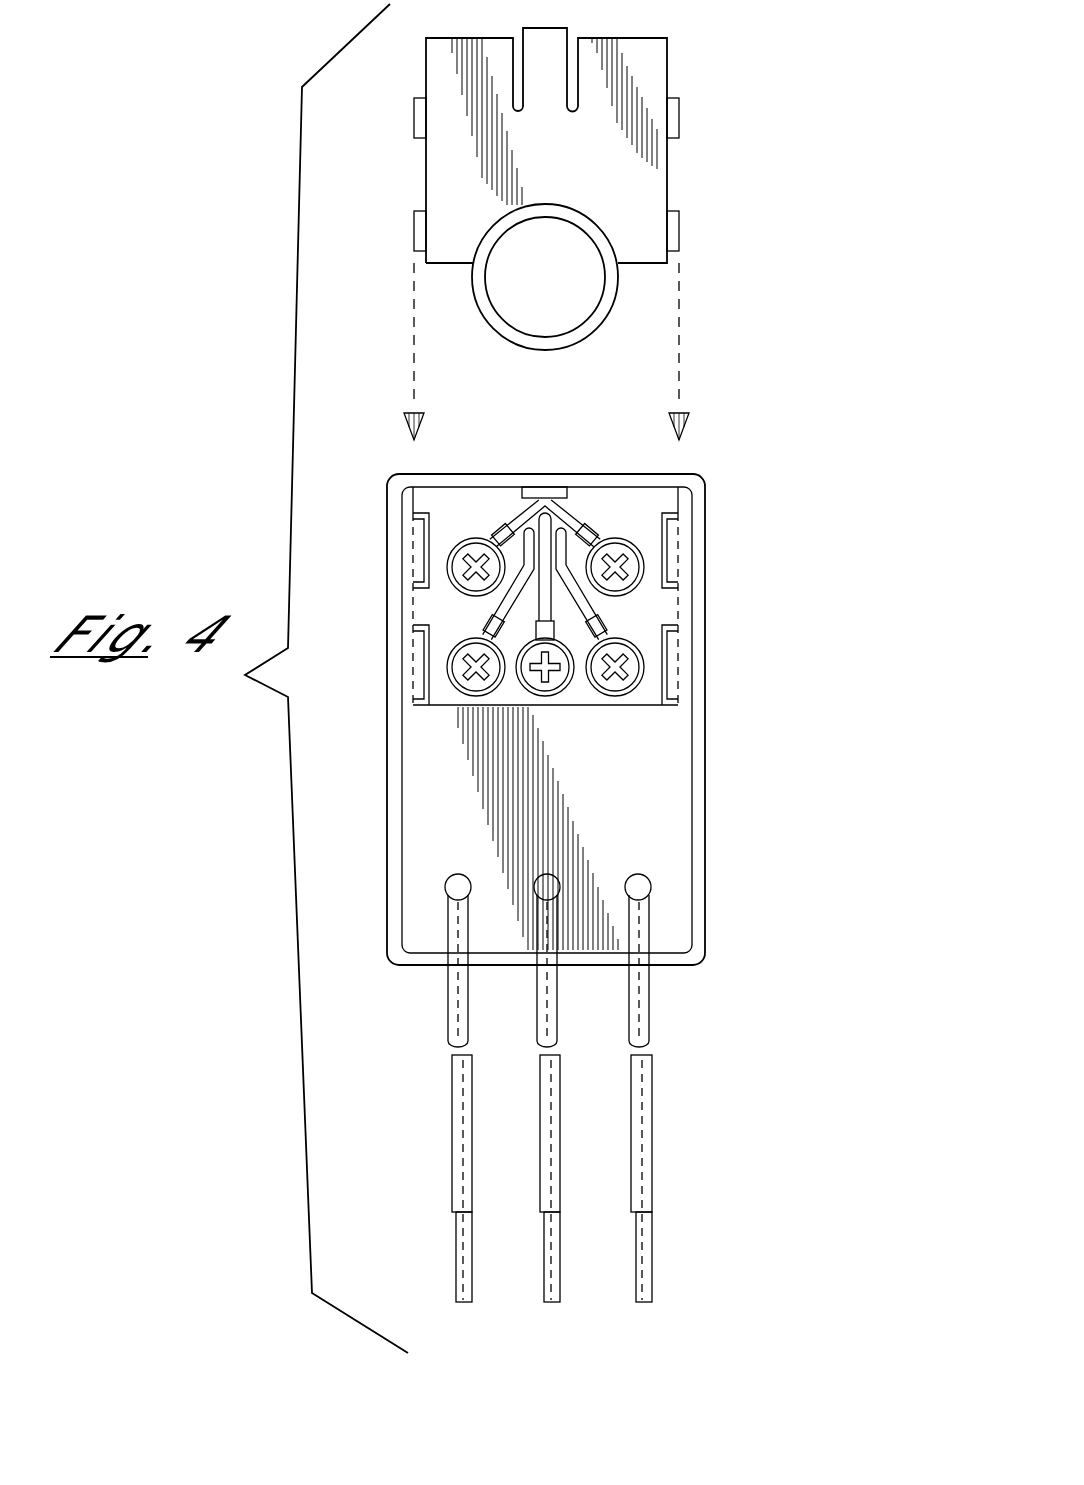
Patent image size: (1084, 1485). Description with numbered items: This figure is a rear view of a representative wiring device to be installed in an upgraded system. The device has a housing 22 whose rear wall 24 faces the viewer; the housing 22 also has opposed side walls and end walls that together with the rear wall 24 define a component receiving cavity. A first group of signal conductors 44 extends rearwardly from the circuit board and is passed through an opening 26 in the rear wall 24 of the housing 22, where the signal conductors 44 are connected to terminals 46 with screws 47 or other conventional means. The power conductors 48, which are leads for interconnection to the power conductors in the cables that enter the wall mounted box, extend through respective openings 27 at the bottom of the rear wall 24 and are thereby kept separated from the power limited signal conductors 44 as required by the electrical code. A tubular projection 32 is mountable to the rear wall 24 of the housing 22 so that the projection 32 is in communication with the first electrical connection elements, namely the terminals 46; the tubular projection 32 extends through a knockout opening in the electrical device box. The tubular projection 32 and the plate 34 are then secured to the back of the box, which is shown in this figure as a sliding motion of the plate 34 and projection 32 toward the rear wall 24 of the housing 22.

The housing 22 is at (386, 677).
The rear wall 24 is at (443, 748).
The opening 26 is at (557, 505).
The openings 27 is at (447, 888).
The tubular projection 32 is at (598, 336).
The plate 34 is at (655, 57).
The signal conductors 44 is at (532, 510).
The terminals 46 is at (642, 550).
The screws 47 is at (630, 670).
The power conductors 48 is at (452, 1092).